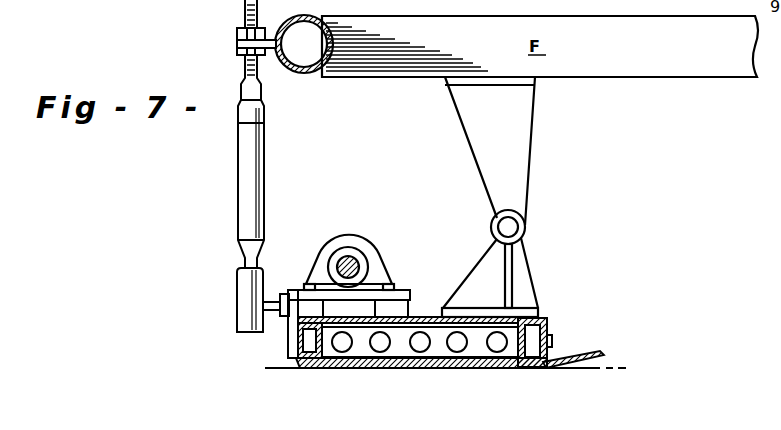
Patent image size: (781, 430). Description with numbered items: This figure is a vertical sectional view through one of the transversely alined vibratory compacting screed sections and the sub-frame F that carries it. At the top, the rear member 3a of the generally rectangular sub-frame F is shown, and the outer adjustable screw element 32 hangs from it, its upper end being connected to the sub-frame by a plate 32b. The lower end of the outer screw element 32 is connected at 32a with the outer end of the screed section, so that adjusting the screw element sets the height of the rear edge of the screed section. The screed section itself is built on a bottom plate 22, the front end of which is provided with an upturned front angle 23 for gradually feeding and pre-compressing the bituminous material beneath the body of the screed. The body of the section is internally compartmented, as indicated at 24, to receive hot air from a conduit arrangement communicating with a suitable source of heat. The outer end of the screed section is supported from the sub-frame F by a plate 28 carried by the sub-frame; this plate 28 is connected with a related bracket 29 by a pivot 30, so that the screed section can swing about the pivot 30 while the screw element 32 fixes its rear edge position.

The rear member 3a is at (300, 73).
The plate 32b is at (237, 51).
The outer adjustable screw element 32 is at (264, 173).
The lower end connection of outer screw element 32a is at (270, 301).
The bottom plate 22 is at (296, 367).
The internal compartment 24 is at (436, 333).
The upturned front angle 23 is at (572, 362).
The plate 28 is at (531, 176).
The pivot 30 is at (498, 228).
The bracket 29 is at (527, 259).